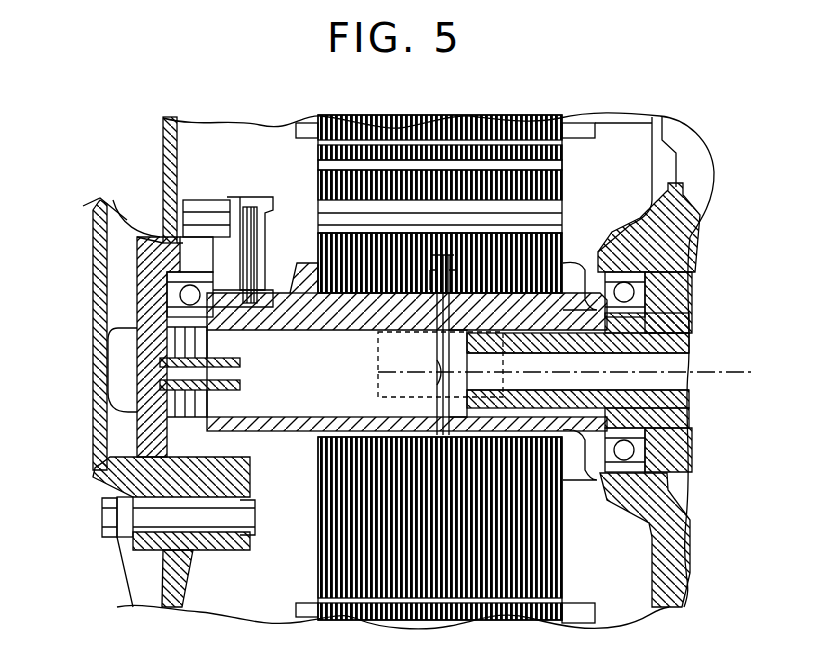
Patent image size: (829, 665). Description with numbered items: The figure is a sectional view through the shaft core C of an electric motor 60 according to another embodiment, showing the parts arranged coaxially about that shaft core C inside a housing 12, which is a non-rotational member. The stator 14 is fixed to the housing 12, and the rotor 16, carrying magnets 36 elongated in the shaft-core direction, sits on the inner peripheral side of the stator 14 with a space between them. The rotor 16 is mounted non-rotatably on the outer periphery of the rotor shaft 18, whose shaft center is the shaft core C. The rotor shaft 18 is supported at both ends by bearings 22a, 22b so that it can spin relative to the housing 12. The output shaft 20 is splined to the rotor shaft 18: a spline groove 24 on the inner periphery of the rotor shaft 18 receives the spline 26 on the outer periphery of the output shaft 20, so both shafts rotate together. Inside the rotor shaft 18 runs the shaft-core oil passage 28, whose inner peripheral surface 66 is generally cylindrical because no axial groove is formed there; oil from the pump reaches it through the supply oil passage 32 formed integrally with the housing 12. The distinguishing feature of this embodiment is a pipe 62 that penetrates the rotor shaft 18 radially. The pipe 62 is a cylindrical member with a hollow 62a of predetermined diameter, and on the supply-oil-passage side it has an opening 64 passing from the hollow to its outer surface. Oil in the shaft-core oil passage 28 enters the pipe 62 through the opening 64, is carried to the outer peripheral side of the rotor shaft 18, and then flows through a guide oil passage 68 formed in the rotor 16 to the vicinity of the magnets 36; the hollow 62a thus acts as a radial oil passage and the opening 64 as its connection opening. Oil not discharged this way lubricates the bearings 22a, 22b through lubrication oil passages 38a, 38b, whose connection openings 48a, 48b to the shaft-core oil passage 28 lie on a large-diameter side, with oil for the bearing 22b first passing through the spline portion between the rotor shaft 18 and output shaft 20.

The housing 12 is at (163, 130).
The stator 14 is at (318, 130).
The rotor 16 is at (562, 246).
The rotor shaft 18 is at (262, 507).
The output shaft 20 is at (690, 395).
The bearing 22a is at (150, 441).
The bearing 22b is at (690, 254).
The spline groove 24 is at (640, 450).
The spline 26 is at (585, 442).
The shaft-core oil passage 28 is at (291, 403).
The supply oil passage 32 is at (93, 292).
The magnet 36 is at (562, 166).
The lubrication oil passage 38a is at (190, 325).
The lubrication oil passage 38b is at (630, 308).
The connection opening 48a is at (170, 332).
The connection opening 48b is at (655, 330).
The electric motor 60 is at (620, 76).
The pipe 62 is at (433, 355).
The hollow 62a is at (433, 392).
The opening 64 is at (433, 347).
The inner peripheral surface 66 is at (300, 338).
The guide oil passage 68 is at (442, 232).
The shaft core C is at (576, 374).